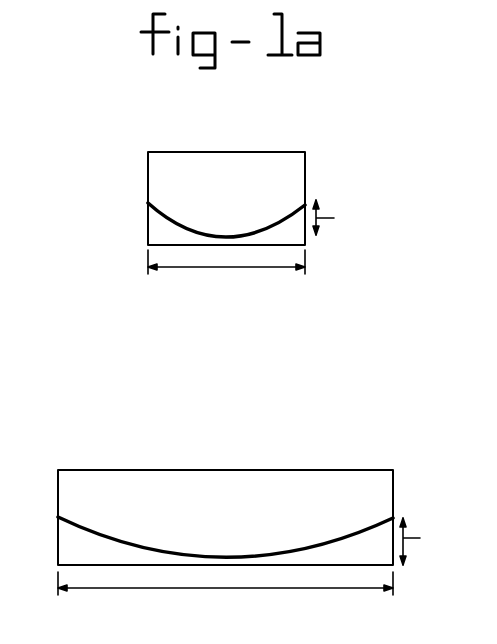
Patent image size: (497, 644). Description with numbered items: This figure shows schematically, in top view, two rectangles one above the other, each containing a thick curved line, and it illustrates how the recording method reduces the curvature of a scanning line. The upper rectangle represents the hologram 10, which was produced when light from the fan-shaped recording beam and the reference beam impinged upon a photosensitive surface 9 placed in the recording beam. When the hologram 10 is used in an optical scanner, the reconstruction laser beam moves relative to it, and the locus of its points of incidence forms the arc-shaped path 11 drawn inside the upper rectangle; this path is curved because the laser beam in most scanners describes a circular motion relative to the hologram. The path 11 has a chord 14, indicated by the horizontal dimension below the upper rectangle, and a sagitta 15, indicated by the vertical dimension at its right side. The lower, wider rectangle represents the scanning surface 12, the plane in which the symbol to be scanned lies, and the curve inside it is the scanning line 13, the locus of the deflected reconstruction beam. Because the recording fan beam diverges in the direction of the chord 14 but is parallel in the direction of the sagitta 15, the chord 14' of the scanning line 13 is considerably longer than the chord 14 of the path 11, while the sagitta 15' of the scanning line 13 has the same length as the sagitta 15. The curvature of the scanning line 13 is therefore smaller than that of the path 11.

The photosensitive surface 9 is at (258, 180).
The hologram 10 is at (296, 159).
The path 11 is at (150, 203).
The scanning surface 12 is at (367, 479).
The scanning line 13 is at (62, 521).
The chord 14 is at (226, 277).
The chord 14' is at (225, 596).
The sagitta 15 is at (337, 217).
The sagitta 15' is at (425, 541).